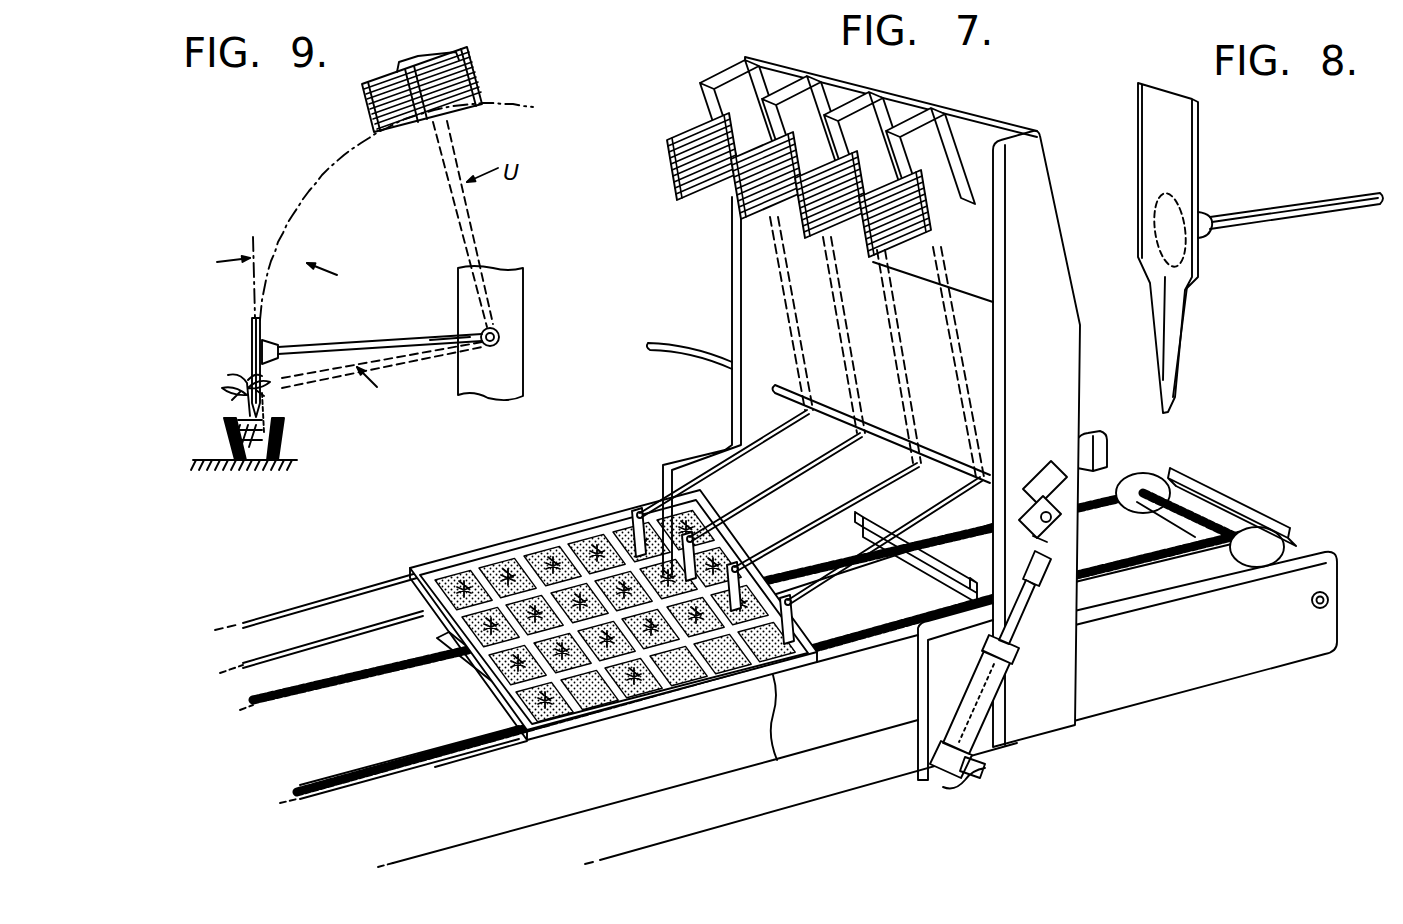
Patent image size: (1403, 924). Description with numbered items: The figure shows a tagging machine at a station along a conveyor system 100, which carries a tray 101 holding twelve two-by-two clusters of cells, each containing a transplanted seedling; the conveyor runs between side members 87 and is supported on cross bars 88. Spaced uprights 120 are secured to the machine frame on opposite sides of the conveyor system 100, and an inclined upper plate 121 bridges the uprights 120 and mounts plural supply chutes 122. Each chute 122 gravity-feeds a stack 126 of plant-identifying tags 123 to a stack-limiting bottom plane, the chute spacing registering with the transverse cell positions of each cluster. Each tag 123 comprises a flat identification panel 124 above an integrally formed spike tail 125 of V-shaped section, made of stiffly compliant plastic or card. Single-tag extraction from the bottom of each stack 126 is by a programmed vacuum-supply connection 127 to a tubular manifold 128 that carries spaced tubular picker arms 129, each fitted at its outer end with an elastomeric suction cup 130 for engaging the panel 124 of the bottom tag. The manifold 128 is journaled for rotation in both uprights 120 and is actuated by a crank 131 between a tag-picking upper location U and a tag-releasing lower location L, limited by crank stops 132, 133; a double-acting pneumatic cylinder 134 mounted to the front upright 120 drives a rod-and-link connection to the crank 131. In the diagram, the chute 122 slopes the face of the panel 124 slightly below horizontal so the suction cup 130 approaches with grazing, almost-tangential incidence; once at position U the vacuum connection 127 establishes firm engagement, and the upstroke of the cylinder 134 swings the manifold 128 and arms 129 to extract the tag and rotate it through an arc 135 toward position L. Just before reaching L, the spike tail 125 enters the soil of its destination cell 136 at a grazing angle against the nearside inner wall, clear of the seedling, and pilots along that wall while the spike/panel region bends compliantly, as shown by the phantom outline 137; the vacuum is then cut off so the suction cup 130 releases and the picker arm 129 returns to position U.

In FIG. 7, the conveyor 87 is at (357, 603).
In FIG. 7, the cross bars 88 is at (465, 684).
In FIG. 7, the conveyor system 100 is at (807, 807).
In FIG. 7, the tray 101 is at (540, 525).
In FIG. 7, the uprights 120 is at (733, 326).
In FIG. 7, the inclined upper plate 121 is at (990, 128).
In FIG. 7, the supply chute 122 is at (828, 110).
In FIG. 9, the supply chute 122 is at (423, 62).
In FIG. 8, the plant-identifying tag 123 is at (1165, 248).
In FIG. 9, the plant-identifying tag 123 is at (248, 337).
In FIG. 8, the identification panel 124 is at (1195, 137).
In FIG. 8, the spike tail 125 is at (1183, 363).
In FIG. 7, the stack 126 is at (733, 232).
In FIG. 9, the stack 126 is at (395, 103).
In FIG. 7, the vacuum-supply connection 127 is at (667, 352).
In FIG. 7, the tubular manifold 128 is at (932, 458).
In FIG. 9, the tubular manifold 128 is at (500, 333).
In FIG. 7, the tubular picker arm 129 is at (788, 484).
In FIG. 8, the tubular picker arm 129 is at (1318, 200).
In FIG. 9, the tubular picker arm 129 is at (405, 335).
In FIG. 8, the elastomeric suction cup 130 is at (1203, 235).
In FIG. 9, the elastomeric suction cup 130 is at (270, 342).
In FIG. 7, the crank 131 is at (1072, 497).
In FIG. 7, the crank stop 132 is at (1023, 572).
In FIG. 7, the crank stop 133 is at (1042, 470).
In FIG. 7, the double-acting pneumatic cylinder 134 is at (990, 715).
In FIG. 9, the arc 135 is at (318, 186).
In FIG. 9, the destination cell 136 is at (277, 447).
In FIG. 9, the phantom outline of compliant bending 137 is at (268, 398).